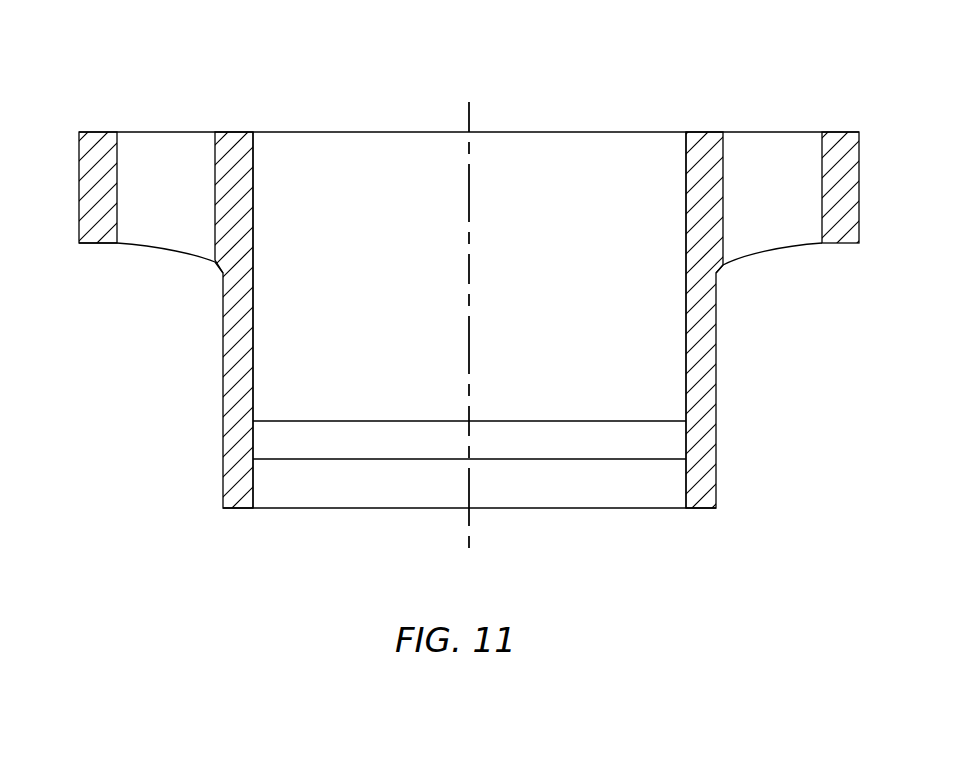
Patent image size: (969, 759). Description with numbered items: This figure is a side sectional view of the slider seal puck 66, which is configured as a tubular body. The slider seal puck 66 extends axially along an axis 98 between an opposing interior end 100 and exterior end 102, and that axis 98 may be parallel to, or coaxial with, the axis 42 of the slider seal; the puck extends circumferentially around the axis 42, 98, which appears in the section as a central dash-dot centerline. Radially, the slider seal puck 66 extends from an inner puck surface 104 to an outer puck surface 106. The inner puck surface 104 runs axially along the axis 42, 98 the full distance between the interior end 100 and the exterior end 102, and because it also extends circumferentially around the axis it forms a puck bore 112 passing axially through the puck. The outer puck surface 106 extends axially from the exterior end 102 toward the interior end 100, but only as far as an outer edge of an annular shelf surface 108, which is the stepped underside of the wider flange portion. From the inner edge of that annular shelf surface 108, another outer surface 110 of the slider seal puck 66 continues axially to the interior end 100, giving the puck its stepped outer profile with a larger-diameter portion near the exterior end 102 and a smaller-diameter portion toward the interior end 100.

The slider seal puck 66 is at (484, 379).
The interior end 100 is at (236, 508).
The exterior end 102 is at (236, 132).
The inner puck surface 104 is at (253, 173).
The outer puck surface 106 is at (79, 168).
The annular shelf surface 108 is at (97, 243).
The outer surface 110 is at (223, 397).
The puck bore 112 is at (543, 170).
The axis 42 is at (470, 544).
The axis 98 is at (470, 544).